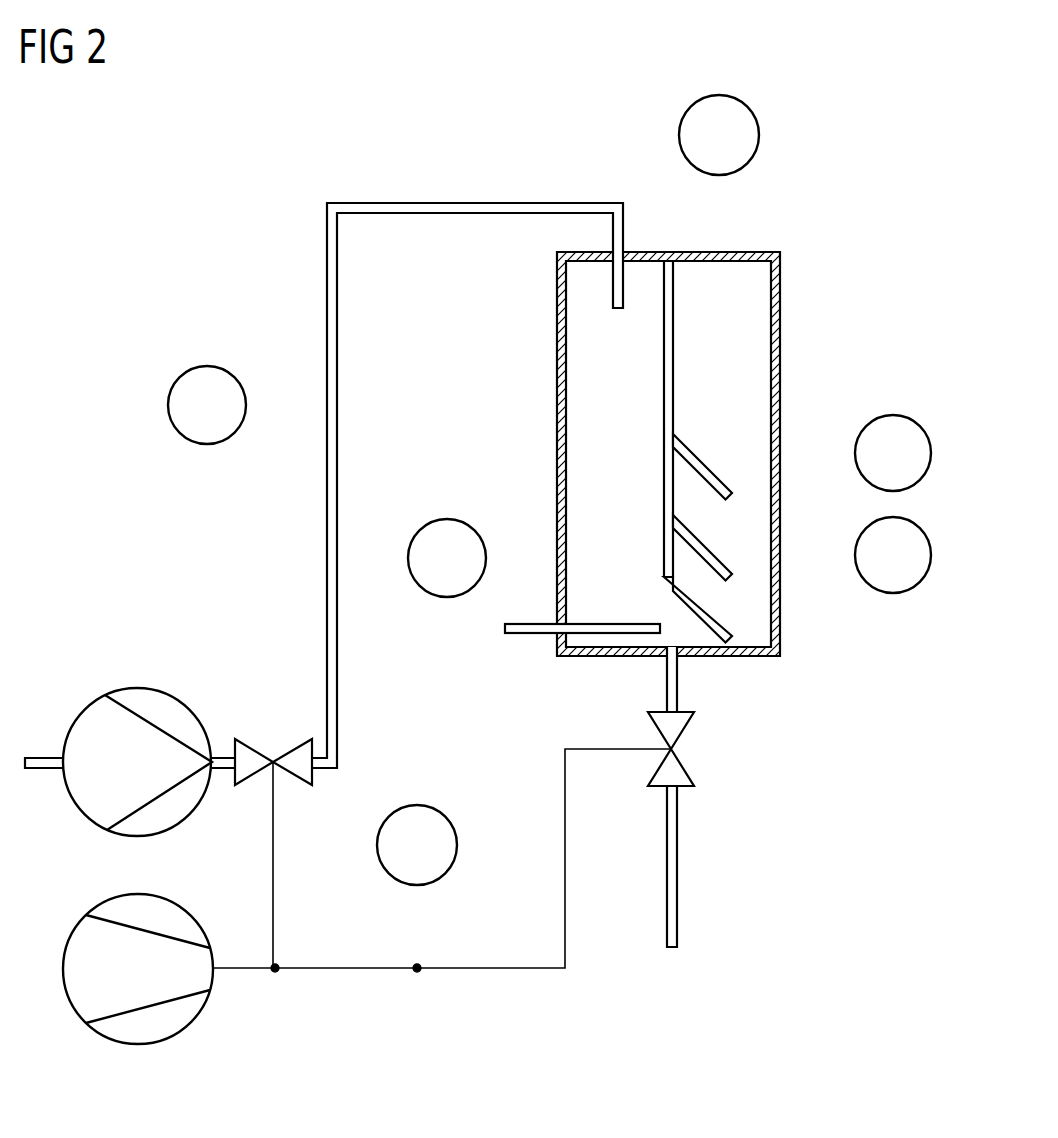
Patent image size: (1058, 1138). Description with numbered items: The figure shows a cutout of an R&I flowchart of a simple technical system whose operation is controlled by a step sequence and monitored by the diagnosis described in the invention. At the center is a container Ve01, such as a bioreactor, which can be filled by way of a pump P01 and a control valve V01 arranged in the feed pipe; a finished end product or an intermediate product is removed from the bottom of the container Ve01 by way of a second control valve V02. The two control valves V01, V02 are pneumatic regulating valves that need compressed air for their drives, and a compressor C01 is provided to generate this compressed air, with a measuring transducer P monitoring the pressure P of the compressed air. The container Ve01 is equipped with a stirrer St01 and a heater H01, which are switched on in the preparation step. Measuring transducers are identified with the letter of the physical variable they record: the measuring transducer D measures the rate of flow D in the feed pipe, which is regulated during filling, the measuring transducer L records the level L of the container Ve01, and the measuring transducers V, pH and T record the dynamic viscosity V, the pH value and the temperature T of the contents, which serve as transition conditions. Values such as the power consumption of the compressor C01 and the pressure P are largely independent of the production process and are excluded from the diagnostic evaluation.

The pump P01 is at (130, 741).
The compressor C01 is at (138, 951).
The control valve V01 is at (273, 841).
The second control valve V02 is at (690, 749).
The container Ve01 is at (701, 454).
The stirrer St01 is at (698, 452).
The heater H01 is at (558, 631).
The level measuring transducer L is at (719, 252).
The flow rate measuring transducer D is at (327, 405).
The viscosity measuring transducer V is at (557, 558).
The pressure measuring transducer P is at (417, 968).
The pH measuring transducer pH is at (780, 453).
The temperature measuring transducer T is at (780, 555).